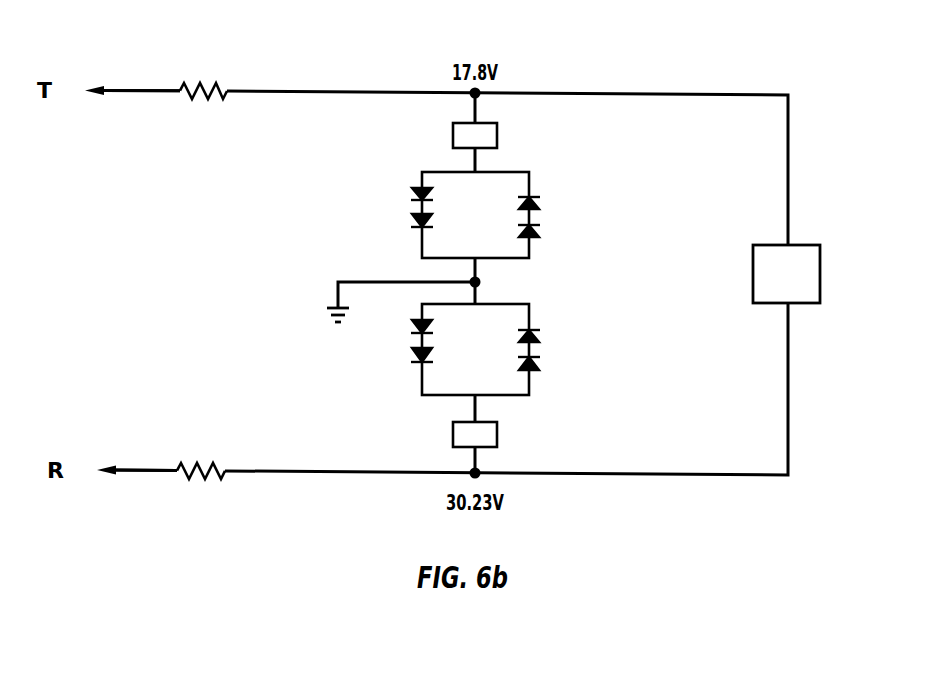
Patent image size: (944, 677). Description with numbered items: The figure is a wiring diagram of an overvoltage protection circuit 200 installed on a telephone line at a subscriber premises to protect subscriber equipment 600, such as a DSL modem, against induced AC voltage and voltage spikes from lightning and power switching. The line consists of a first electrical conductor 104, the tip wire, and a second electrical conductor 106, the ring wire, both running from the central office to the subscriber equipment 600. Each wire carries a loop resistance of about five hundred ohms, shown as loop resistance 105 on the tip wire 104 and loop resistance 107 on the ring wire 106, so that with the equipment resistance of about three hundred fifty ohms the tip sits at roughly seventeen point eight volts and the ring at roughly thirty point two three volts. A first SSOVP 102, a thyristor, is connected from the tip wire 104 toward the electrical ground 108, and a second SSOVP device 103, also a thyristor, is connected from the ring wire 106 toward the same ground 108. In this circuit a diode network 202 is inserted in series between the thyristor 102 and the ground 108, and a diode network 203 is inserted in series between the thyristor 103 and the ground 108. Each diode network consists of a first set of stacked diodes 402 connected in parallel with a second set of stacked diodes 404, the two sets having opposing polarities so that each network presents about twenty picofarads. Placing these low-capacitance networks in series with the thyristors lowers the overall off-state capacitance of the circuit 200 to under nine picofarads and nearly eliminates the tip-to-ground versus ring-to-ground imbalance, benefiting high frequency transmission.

The overvoltage protection circuit 200 is at (610, 46).
The first electrical conductor 104 is at (147, 90).
The loop resistance 105 is at (203, 90).
The second electrical conductor 106 is at (162, 470).
The loop resistance 107 is at (206, 470).
The first SSOVP 102 is at (497, 136).
The second SSOVP device 103 is at (497, 438).
The diode network 202 is at (530, 183).
The diode network 203 is at (530, 380).
The first set of stacked diodes 402 is at (418, 186).
The second set of stacked diodes 404 is at (535, 229).
The electrical ground 108 is at (337, 305).
The subscriber equipment 600 is at (820, 265).